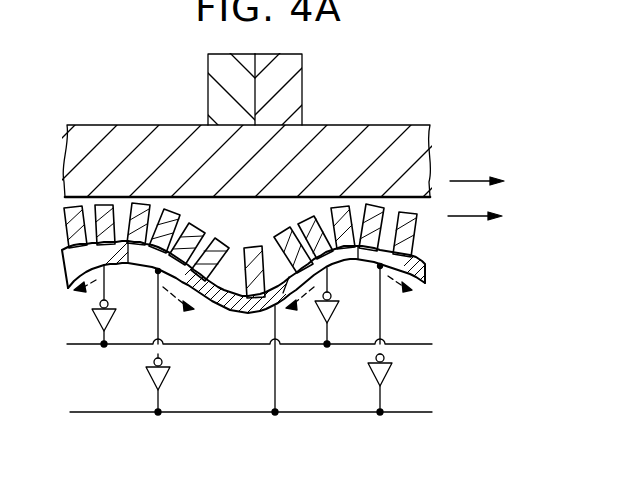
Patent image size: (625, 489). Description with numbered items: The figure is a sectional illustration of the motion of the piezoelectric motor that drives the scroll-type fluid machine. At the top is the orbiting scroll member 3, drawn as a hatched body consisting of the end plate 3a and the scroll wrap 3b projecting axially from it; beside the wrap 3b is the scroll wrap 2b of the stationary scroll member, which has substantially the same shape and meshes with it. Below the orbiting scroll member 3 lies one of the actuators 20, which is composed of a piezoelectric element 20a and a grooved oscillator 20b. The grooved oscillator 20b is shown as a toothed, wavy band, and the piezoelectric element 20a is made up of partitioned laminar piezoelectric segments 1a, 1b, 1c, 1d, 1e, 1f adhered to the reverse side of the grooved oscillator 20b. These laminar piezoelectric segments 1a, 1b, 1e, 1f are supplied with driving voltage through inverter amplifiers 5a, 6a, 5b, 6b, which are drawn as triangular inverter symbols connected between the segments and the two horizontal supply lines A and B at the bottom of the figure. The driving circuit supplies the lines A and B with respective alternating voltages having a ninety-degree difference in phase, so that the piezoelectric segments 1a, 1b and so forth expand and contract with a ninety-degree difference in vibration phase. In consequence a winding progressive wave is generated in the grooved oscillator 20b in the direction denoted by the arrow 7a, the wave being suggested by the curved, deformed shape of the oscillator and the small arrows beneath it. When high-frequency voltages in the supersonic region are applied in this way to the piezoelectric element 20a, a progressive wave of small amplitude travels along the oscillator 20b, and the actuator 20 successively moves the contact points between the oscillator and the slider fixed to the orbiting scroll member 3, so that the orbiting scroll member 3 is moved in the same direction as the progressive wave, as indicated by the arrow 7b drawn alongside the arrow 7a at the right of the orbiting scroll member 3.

The scroll wrap 2b is at (208, 90).
The orbiting scroll member 3 is at (249, 120).
The end plate 3a is at (362, 148).
The scroll wrap 3b is at (300, 86).
The arrow 7a is at (478, 216).
The moving direction of moving body 7b is at (468, 180).
The actuator 20 is at (297, 266).
The piezoelectric element 20a is at (425, 283).
The grooved oscillator 20b is at (425, 262).
The laminar piezoelectric segment 1a is at (117, 262).
The laminar piezoelectric segment 1b is at (145, 267).
The electrode 1c is at (243, 313).
The electrode 1d is at (278, 306).
The laminar piezoelectric segment 1e is at (342, 268).
The laminar piezoelectric segment 1f is at (385, 276).
The inverter amplifier 5a is at (94, 316).
The inverter amplifier 5b is at (333, 325).
The inverter amplifier 6a is at (170, 384).
The inverter amplifier 6b is at (392, 384).
The line A is at (229, 347).
The line B is at (229, 416).